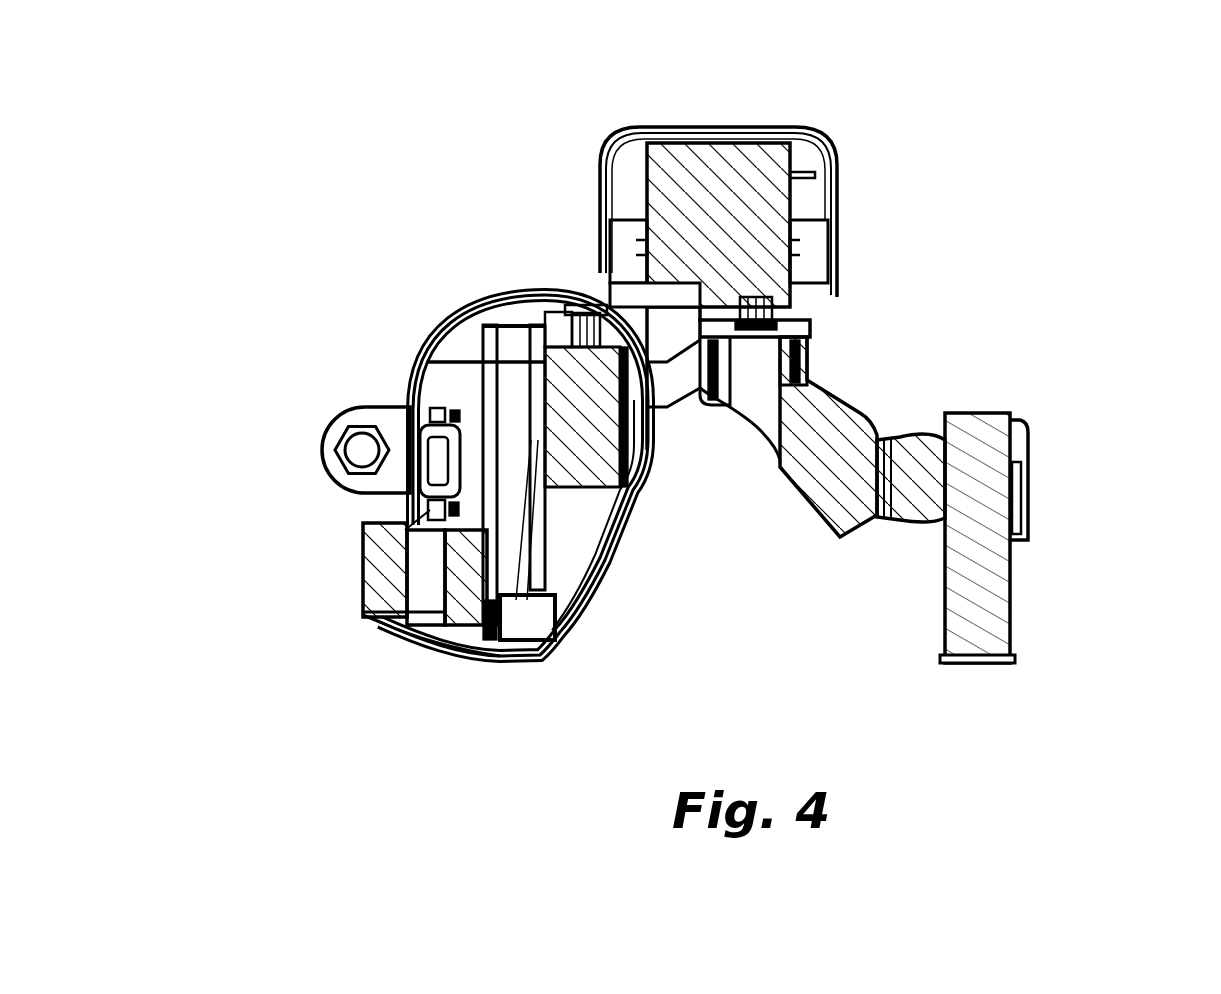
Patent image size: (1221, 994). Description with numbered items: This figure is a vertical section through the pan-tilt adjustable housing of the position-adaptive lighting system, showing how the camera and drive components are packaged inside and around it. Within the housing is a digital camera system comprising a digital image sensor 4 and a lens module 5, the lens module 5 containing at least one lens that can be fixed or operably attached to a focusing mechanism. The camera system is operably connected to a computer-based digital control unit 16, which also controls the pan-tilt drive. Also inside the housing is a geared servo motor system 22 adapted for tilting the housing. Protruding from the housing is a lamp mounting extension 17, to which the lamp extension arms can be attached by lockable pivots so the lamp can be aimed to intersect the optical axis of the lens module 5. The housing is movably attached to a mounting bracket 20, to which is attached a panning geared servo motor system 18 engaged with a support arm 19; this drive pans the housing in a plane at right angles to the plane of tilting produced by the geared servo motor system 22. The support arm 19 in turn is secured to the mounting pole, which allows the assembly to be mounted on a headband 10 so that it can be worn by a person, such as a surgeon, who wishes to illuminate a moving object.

The digital image sensor 4 is at (485, 567).
The lens module 5 is at (416, 594).
The headband 10 is at (978, 625).
The computer-based digital control unit 16 is at (531, 432).
The lamp mounting extension 17 is at (366, 405).
The panning geared servo motor system 18 is at (720, 190).
The support arm 19 is at (835, 455).
The mounting bracket 20 is at (672, 372).
The geared servo motor system 22 is at (586, 405).